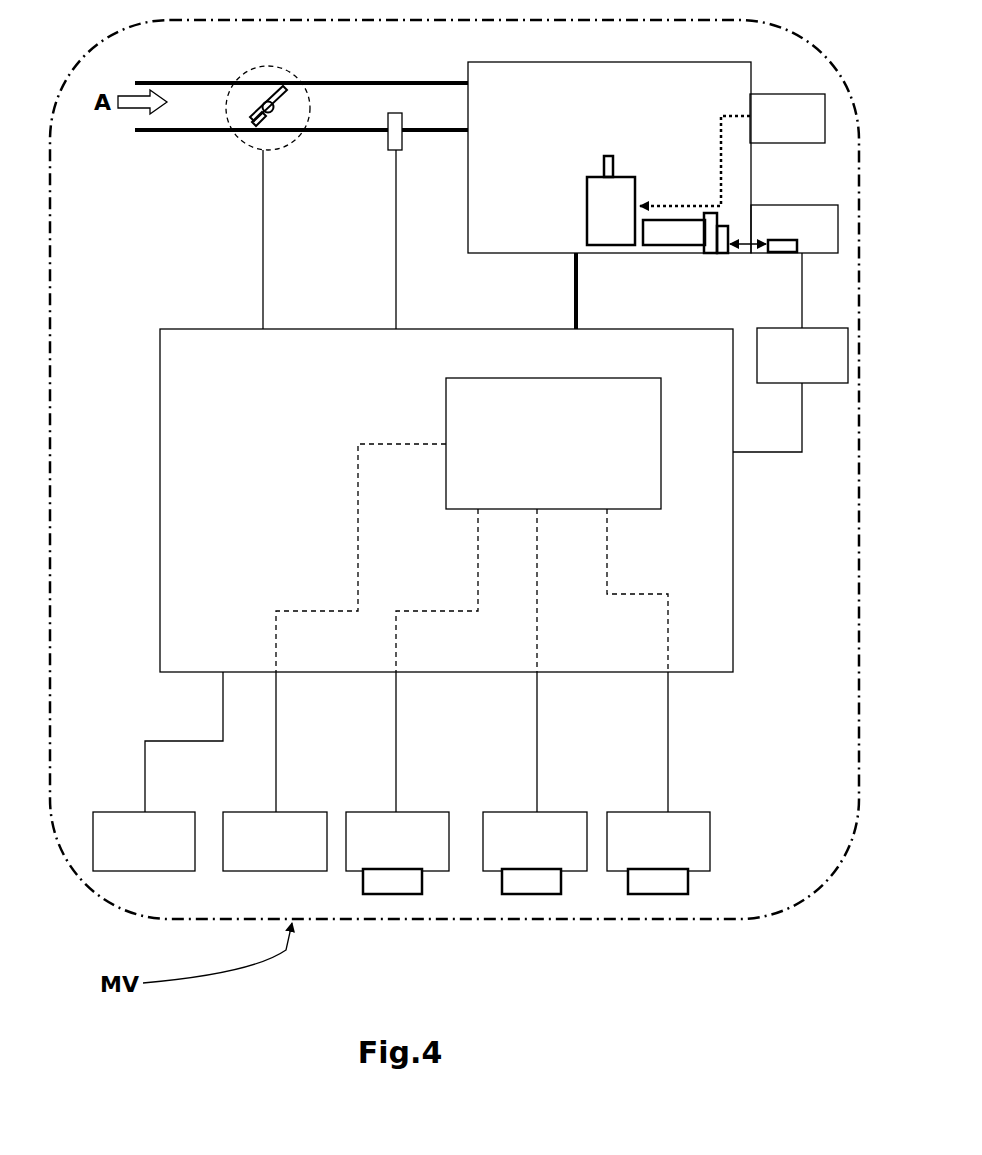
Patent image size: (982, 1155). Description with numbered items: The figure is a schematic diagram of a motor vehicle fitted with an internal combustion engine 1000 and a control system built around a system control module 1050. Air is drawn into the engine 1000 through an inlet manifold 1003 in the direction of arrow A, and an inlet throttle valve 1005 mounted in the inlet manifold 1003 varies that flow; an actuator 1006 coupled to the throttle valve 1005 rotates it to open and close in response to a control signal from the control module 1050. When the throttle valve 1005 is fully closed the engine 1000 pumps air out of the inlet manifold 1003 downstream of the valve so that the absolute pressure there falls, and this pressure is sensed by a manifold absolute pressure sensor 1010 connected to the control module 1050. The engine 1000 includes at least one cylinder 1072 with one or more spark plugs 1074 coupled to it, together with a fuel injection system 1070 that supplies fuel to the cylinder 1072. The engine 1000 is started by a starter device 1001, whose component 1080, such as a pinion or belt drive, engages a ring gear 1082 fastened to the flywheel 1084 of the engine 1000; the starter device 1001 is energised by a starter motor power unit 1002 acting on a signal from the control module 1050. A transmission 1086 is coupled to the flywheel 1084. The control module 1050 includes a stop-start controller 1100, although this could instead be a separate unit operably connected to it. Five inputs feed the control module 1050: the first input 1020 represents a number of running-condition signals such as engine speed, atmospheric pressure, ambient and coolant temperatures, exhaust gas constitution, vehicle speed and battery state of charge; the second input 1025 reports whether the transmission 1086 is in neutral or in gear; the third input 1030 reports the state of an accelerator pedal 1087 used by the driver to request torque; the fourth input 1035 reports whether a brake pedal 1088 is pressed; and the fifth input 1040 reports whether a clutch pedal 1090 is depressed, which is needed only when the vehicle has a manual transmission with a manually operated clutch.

The internal combustion engine 1000 is at (637, 147).
The starter device 1001 is at (820, 237).
The starter motor power unit 1002 is at (776, 362).
The inlet manifold 1003 is at (389, 83).
The inlet throttle valve 1005 is at (263, 101).
The actuator 1006 is at (296, 74).
The manifold absolute pressure sensor 1010 is at (387, 151).
The first input 1020 is at (171, 846).
The second input 1025 is at (302, 846).
The third input 1030 is at (424, 846).
The fourth input 1035 is at (562, 846).
The fifth input 1040 is at (685, 846).
The system control module 1050 is at (302, 505).
The fuel injection system 1070 is at (764, 130).
The cylinder 1072 is at (636, 190).
The spark plug 1074 is at (614, 165).
The component 1080 is at (778, 253).
The ring gear 1082 is at (724, 254).
The flywheel 1084 is at (710, 254).
The transmission 1086 is at (662, 246).
The accelerator pedal 1087 is at (363, 882).
The brake pedal 1088 is at (502, 882).
The clutch pedal 1090 is at (628, 882).
The stop-start controller 1100 is at (580, 467).